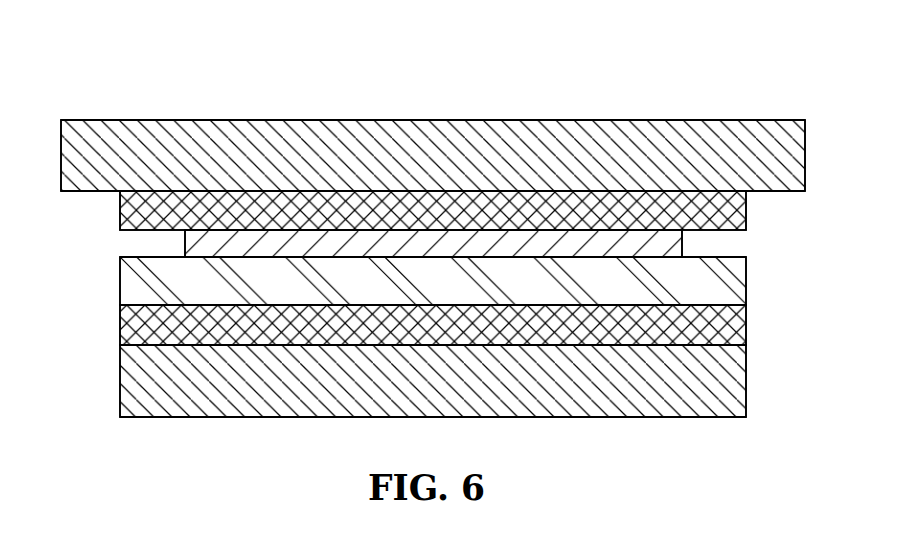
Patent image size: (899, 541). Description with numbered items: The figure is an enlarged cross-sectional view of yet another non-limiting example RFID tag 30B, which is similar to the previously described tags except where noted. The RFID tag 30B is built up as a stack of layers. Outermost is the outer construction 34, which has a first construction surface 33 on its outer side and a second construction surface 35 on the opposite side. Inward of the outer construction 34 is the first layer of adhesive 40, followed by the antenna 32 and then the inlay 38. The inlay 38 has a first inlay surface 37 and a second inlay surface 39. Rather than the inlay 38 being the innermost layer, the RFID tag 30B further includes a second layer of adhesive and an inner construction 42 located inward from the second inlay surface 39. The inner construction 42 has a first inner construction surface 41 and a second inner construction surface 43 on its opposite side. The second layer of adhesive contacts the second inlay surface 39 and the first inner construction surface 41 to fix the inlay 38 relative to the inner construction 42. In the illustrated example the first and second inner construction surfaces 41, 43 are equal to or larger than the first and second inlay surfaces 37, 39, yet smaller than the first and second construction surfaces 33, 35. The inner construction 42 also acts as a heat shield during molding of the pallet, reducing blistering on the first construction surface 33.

The RFID tag 30B is at (170, 77).
The antenna 32 is at (185, 241).
The first construction surface 33 is at (673, 120).
The outer construction 34 is at (805, 153).
The second construction surface 35 is at (767, 193).
The first inlay surface 37 is at (130, 256).
The inlay 38 is at (747, 283).
The second inlay surface 39 is at (747, 312).
The first layer of adhesive 40 is at (747, 210).
The first inner construction surface 41 is at (747, 336).
The inner construction 42 is at (747, 375).
The second inner construction surface 43 is at (713, 417).